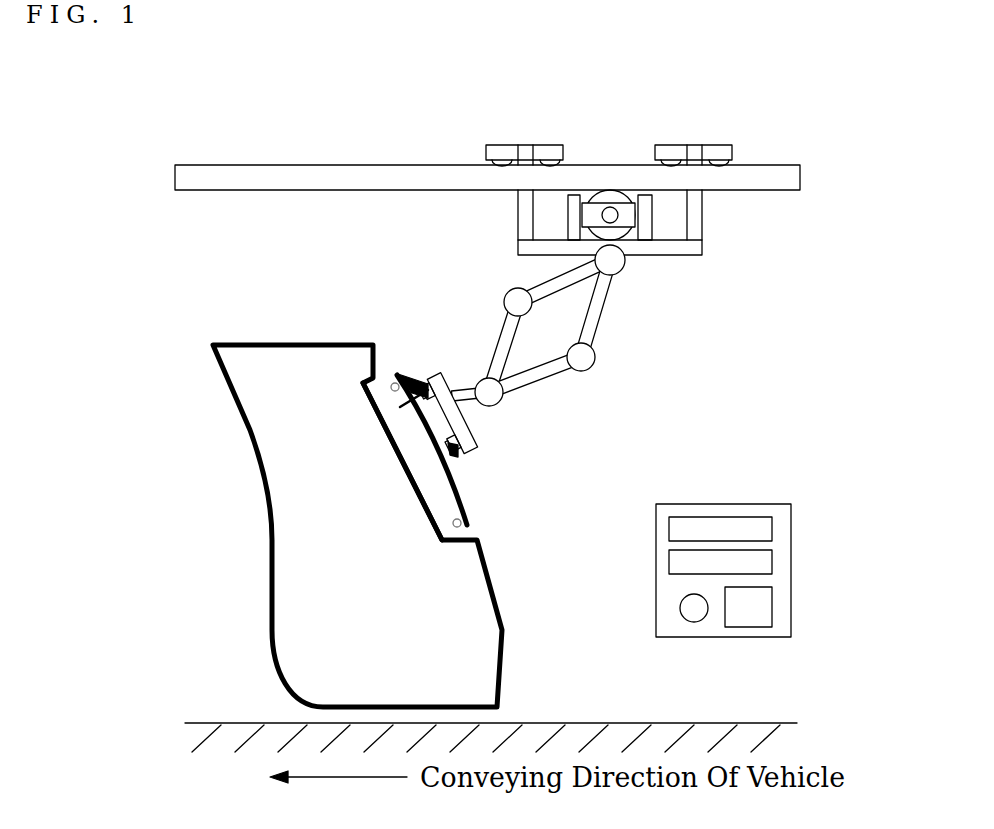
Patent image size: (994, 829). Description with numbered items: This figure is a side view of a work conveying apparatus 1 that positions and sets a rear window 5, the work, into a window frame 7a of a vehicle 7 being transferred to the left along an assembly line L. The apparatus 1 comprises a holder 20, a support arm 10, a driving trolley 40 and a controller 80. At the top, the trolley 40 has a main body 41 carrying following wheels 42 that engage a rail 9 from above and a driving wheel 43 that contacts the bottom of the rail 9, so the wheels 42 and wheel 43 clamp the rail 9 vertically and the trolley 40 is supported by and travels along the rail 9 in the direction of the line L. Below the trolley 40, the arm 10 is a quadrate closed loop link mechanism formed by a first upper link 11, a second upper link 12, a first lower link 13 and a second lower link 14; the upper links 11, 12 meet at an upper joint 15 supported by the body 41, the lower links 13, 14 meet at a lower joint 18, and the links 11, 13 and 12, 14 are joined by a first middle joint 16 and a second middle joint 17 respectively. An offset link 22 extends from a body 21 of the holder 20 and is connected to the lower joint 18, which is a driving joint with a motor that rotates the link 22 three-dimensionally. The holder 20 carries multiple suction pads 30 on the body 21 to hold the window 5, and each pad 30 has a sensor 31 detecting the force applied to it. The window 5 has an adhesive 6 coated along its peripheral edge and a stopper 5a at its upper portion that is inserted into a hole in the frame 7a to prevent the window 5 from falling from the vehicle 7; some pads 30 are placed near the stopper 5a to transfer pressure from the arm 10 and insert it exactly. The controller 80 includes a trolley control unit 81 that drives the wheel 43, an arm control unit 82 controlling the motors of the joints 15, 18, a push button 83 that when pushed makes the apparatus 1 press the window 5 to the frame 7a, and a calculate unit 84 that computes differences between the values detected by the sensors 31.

The work conveying apparatus 1 is at (392, 262).
The rear window 5 is at (455, 487).
The stopper 5a is at (408, 407).
The adhesive 6 is at (392, 384).
The vehicle 7 is at (290, 343).
The window frame 7a is at (430, 527).
The rail 9 is at (310, 165).
The support arm 10 is at (568, 341).
The first upper link 11 is at (552, 282).
The second upper link 12 is at (602, 303).
The first lower link 13 is at (505, 338).
The second lower link 14 is at (550, 372).
The upper joint 15 is at (620, 268).
The first middle joint 16 is at (510, 300).
The second middle joint 17 is at (587, 360).
The lower joint 18 is at (495, 397).
The holder 20 is at (487, 417).
The body 21 is at (468, 452).
The offset link 22 is at (462, 390).
The suction pads 30 is at (410, 383).
The sensor 31 is at (427, 387).
The driving trolley 40 is at (626, 190).
The main body 41 is at (697, 207).
The following wheels 42 is at (550, 160).
The driving wheel 43 is at (610, 233).
The controller 80 is at (701, 563).
The trolley control unit 81 is at (669, 525).
The arm control unit 82 is at (669, 562).
The push button 83 is at (680, 608).
The calculate unit 84 is at (745, 627).
The assembly line L is at (655, 722).